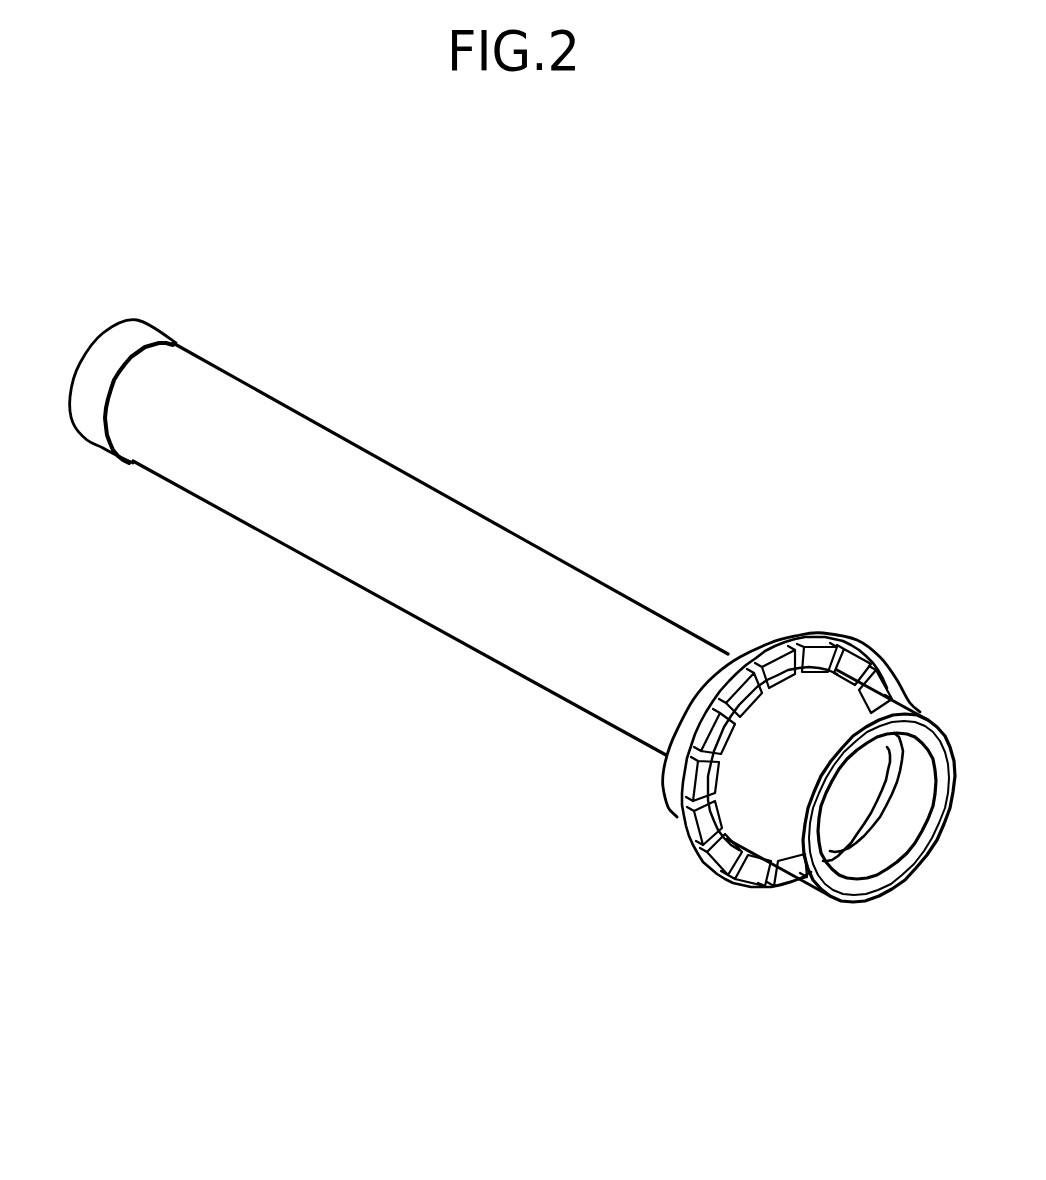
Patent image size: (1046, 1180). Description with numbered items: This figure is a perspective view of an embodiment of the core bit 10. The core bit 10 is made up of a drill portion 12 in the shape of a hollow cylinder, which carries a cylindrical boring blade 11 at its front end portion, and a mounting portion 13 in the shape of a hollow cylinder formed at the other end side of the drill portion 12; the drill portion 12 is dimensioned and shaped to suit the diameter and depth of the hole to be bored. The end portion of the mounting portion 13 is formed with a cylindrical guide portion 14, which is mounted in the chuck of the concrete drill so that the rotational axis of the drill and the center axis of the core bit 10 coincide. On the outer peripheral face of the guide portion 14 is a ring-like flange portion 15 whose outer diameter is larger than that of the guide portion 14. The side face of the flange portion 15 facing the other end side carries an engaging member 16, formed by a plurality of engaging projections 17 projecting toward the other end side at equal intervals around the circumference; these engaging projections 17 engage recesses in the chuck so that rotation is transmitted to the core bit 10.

The core bit 10 is at (623, 423).
The boring blade 11 is at (152, 320).
The drill portion 12 is at (302, 553).
The mounting portion 13 is at (683, 908).
The guide portion 14 is at (840, 903).
The flange portion 15 is at (677, 790).
The engaging member 16 is at (855, 533).
The engaging projections 17 is at (735, 718).